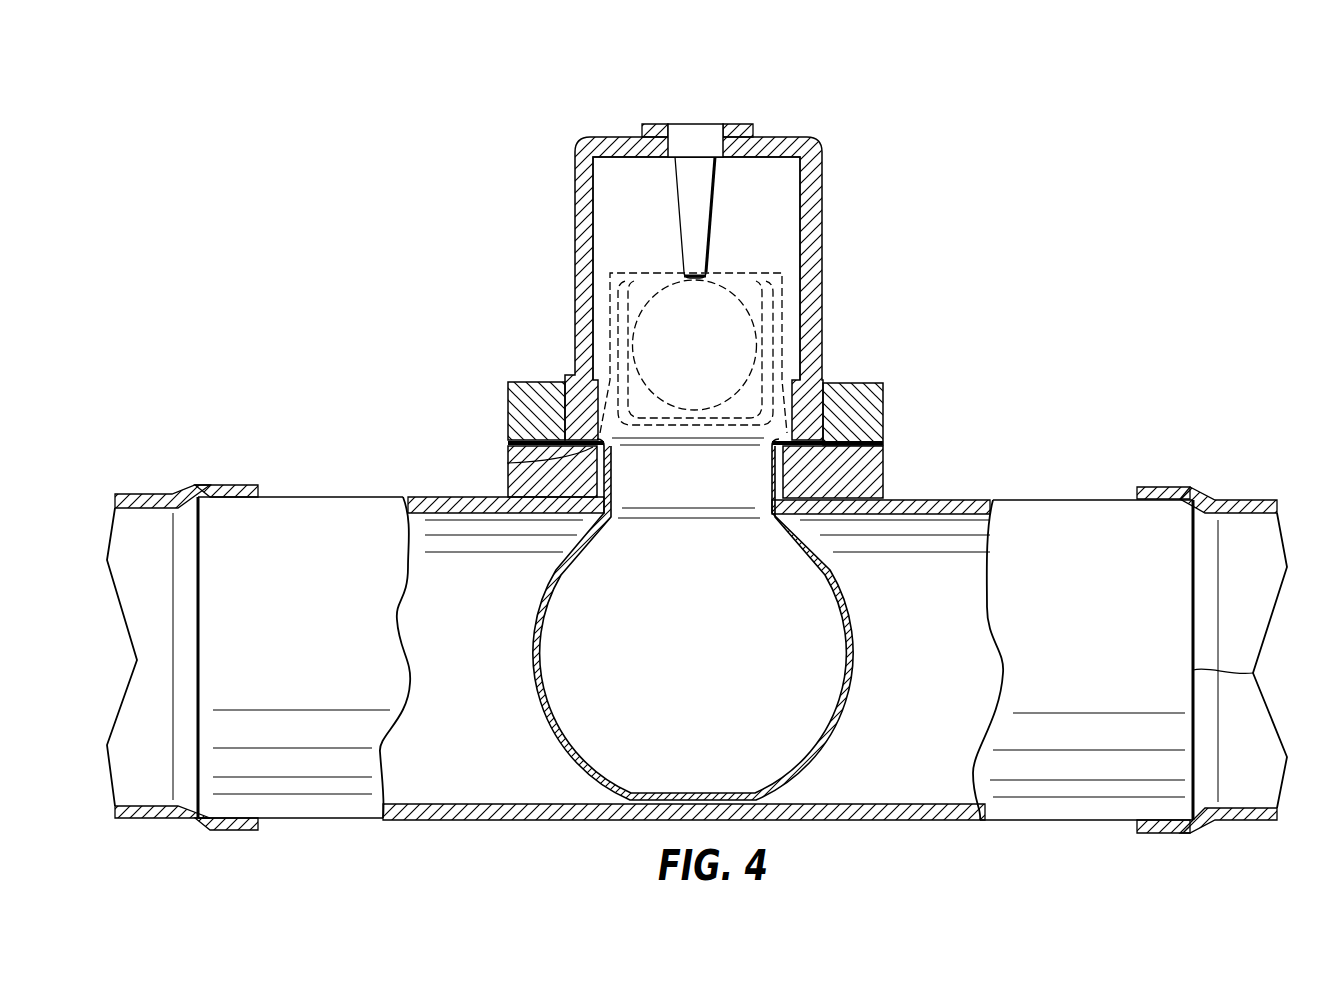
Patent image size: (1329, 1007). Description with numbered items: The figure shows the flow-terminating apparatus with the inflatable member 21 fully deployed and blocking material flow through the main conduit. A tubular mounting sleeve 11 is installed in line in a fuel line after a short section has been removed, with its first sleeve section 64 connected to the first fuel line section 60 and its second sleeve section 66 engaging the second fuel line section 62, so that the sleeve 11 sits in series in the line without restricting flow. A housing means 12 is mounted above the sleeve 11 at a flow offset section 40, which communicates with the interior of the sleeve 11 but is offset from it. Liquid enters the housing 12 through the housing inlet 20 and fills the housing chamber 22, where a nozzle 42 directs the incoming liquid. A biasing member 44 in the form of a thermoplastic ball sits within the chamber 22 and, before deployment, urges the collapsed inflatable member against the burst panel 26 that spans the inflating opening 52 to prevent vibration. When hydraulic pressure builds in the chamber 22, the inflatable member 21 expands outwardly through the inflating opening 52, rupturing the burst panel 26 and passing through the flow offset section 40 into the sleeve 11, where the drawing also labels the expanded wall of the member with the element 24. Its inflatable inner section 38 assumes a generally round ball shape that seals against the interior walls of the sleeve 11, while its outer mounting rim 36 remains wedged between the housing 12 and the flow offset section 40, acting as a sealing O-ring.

The tubular mounting sleeve 11 is at (1080, 633).
The housing means 12 is at (820, 184).
The housing inlet 20 is at (680, 124).
The inflatable member 21 is at (775, 275).
The housing chamber 22 is at (623, 205).
The tube 24 is at (827, 552).
The burst panel 26 is at (507, 463).
The outer mounting rim 36 is at (807, 445).
The inflatable inner section 38 is at (539, 656).
The flow offset section 40 is at (517, 395).
The nozzle 42 is at (713, 182).
The biasing member 44 is at (662, 287).
The inflating opening 52 is at (683, 457).
The first fuel line section 60 is at (150, 494).
The second fuel line section 62 is at (1217, 492).
The first sleeve section 64 is at (190, 545).
The second sleeve section 66 is at (1253, 673).